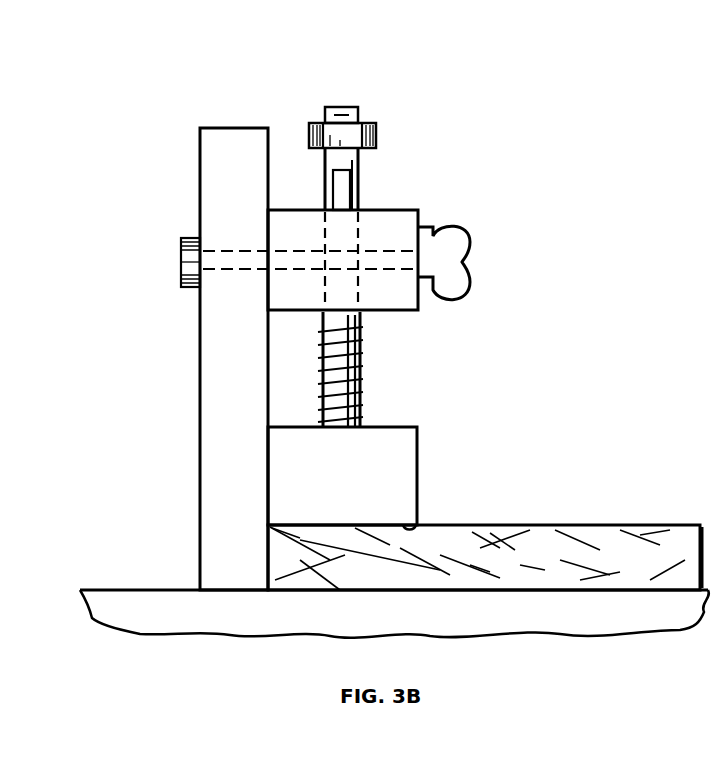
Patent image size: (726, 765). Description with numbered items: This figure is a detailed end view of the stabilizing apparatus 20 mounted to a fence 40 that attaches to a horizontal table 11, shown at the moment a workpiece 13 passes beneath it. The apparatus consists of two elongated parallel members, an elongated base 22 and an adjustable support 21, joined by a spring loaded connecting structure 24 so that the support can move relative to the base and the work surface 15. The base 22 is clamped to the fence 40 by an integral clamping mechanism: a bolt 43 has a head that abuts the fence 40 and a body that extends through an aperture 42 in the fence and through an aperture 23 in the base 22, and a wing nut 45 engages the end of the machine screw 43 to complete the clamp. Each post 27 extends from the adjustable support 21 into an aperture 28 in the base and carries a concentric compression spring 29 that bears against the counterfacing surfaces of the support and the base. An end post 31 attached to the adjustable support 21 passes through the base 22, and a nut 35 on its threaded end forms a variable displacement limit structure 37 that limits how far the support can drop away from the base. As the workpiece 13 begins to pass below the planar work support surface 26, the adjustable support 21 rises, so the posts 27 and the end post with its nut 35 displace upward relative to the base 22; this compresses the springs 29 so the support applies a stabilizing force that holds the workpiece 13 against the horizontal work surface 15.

The work table 11 is at (205, 629).
The workpiece 13 is at (538, 525).
The work surface 15 is at (708, 590).
The stabilizing apparatus 20 is at (419, 211).
The adjustable support 21 is at (420, 453).
The elongated base 22 is at (420, 229).
The aperture 23 is at (288, 256).
The spring loaded connecting structure 24 is at (368, 377).
The work support surface 26 is at (420, 527).
The post 27 is at (343, 186).
The aperture 28 is at (356, 298).
The compression spring 29 is at (361, 389).
The end post 31 is at (340, 106).
The nut 35 is at (378, 139).
The variable displacement limit structure 37 is at (370, 107).
The fence 40 is at (244, 128).
The aperture 42 is at (215, 256).
The bolt 43 is at (183, 281).
The wing nut 45 is at (458, 260).